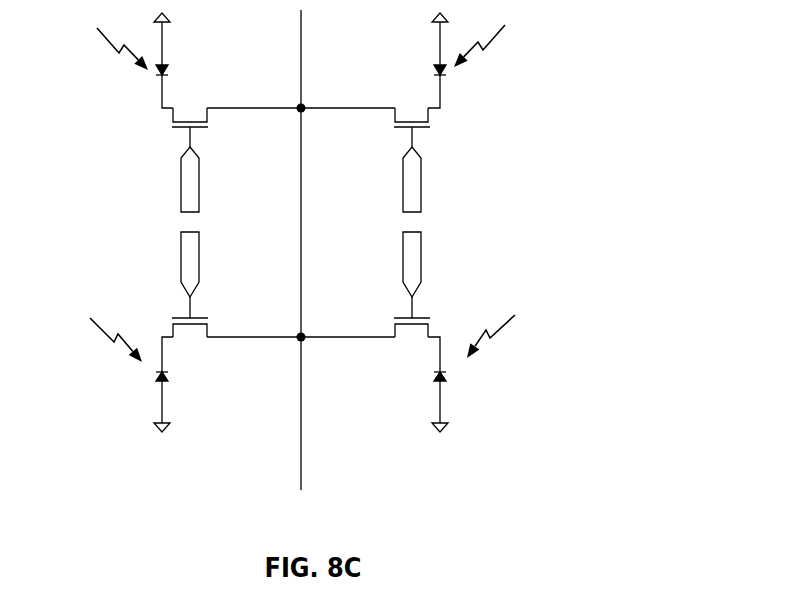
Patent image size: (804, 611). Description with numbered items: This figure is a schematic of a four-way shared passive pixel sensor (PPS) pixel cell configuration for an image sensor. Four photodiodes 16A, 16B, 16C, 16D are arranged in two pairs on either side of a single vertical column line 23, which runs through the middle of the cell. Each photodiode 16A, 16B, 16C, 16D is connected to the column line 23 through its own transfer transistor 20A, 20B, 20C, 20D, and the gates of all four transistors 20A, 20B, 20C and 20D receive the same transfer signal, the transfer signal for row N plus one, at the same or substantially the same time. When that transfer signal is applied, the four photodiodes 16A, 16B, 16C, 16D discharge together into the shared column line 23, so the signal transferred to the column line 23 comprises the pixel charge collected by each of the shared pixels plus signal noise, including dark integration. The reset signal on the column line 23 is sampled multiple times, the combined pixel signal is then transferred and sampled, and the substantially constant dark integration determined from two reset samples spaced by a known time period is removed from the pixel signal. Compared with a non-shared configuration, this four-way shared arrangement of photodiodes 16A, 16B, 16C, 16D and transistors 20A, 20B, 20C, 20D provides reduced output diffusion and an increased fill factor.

The photodiode 16A is at (175, 63).
The photodiode 16B is at (178, 382).
The photodiode 16C is at (425, 62).
The photodiode 16D is at (432, 380).
The transistor 20A is at (183, 133).
The transistor 20B is at (182, 310).
The transistor 20C is at (420, 133).
The transistor 20D is at (428, 308).
The column line 23 is at (306, 219).